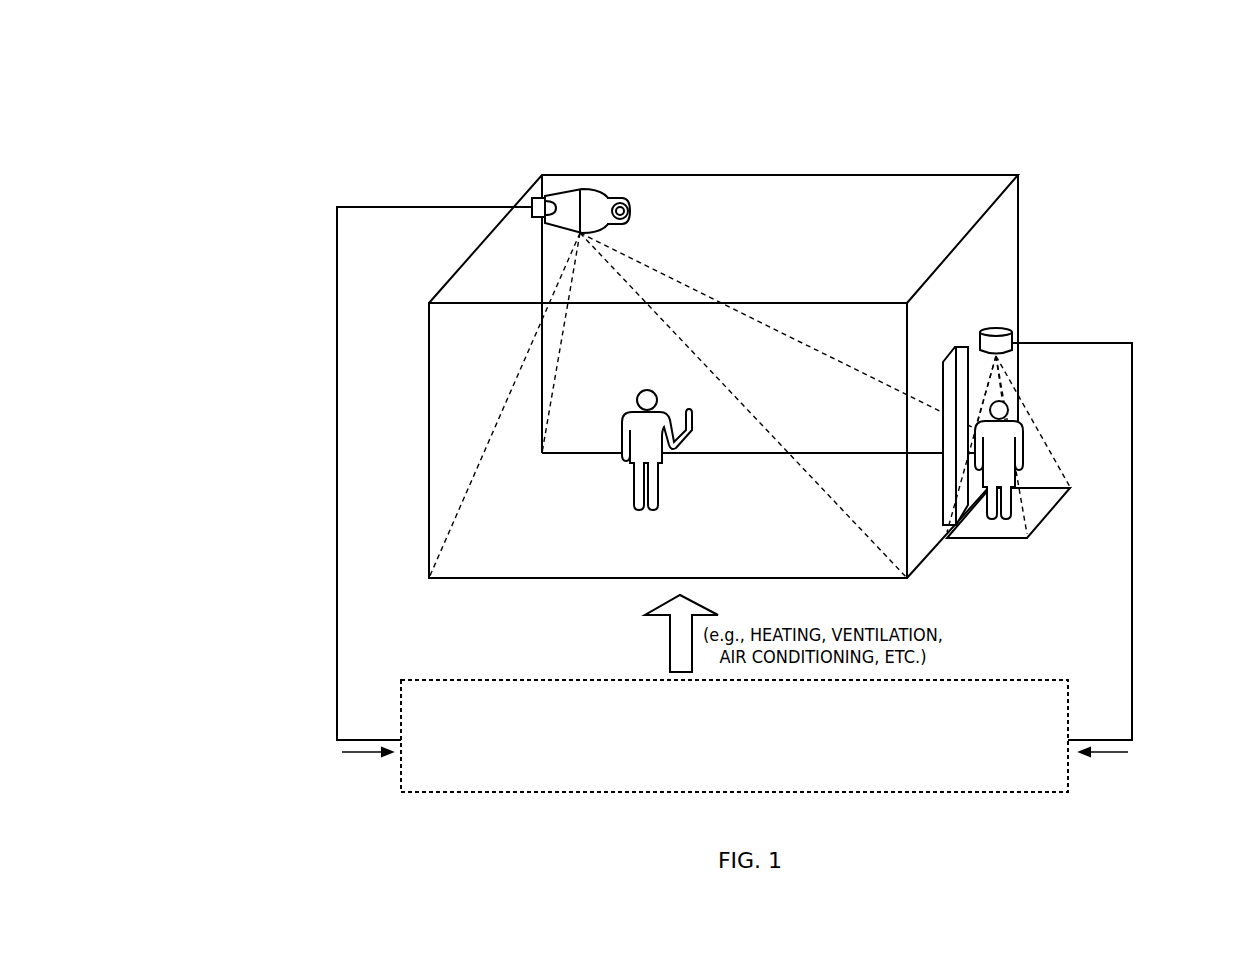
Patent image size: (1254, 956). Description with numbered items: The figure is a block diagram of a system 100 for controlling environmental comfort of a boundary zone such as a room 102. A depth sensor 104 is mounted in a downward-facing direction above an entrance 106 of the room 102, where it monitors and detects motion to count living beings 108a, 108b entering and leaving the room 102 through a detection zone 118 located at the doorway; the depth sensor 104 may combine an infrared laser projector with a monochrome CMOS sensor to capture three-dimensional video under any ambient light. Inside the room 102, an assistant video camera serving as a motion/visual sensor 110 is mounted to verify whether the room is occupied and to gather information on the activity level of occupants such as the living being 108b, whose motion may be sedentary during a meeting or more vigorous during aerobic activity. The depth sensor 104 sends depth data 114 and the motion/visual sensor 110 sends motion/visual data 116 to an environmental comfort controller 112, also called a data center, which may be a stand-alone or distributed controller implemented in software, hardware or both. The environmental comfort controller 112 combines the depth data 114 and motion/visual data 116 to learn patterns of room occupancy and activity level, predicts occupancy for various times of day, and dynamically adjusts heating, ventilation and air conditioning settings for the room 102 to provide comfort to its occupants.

The system 100 is at (1054, 92).
The room 102 is at (930, 175).
The depth sensor 104 is at (1005, 330).
The entrance 106 is at (943, 362).
The living being 108a is at (1025, 430).
The living being 108b is at (645, 391).
The motion/visual sensor 110 is at (586, 190).
The environmental comfort controller 112 is at (734, 736).
The depth data 114 is at (1100, 753).
The motion/visual data 116 is at (358, 753).
The detection zone 118 is at (1062, 466).